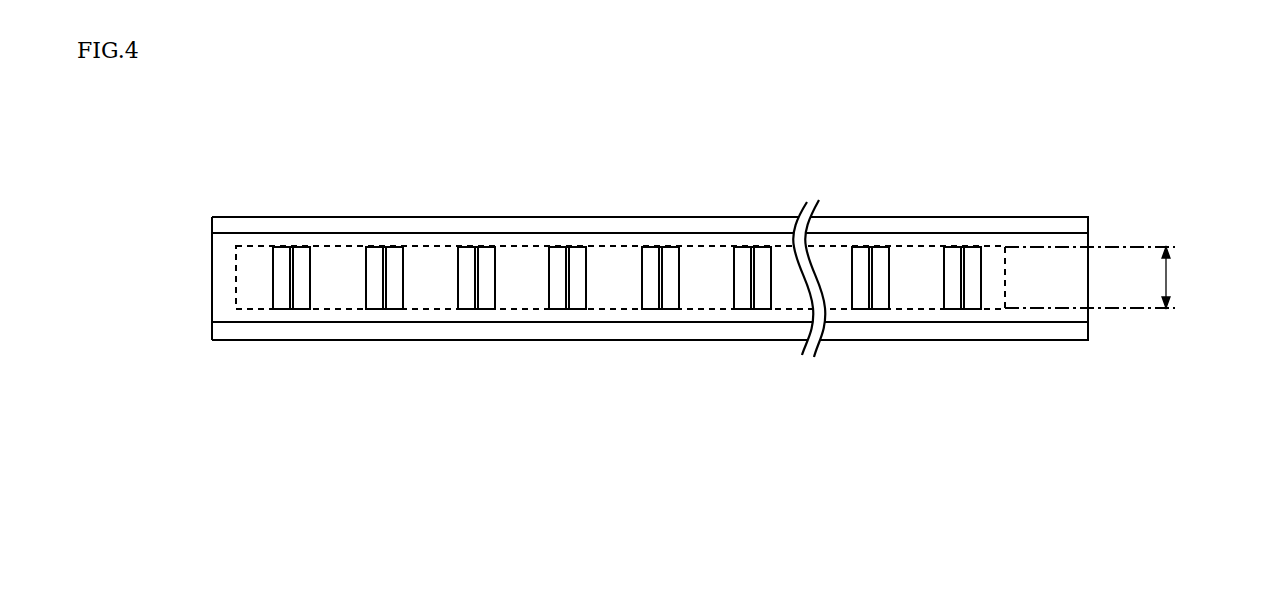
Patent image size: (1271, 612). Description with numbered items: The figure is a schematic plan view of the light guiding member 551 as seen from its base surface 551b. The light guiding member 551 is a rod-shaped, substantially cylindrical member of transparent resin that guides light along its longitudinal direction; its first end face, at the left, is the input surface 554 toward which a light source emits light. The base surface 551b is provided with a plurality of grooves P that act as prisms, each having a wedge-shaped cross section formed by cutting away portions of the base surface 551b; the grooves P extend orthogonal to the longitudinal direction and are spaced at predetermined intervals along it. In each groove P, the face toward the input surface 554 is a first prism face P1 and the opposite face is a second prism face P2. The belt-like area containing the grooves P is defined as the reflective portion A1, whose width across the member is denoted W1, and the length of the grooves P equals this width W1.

The light guiding member 551 is at (1022, 208).
The base surface 551b is at (224, 292).
The input surface 554 is at (210, 273).
The reflective portion A1 is at (327, 310).
The grooves P is at (385, 270).
The first prism face P1 is at (377, 297).
The second prism face P2 is at (393, 298).
The width of the reflective portion W1 is at (1109, 277).